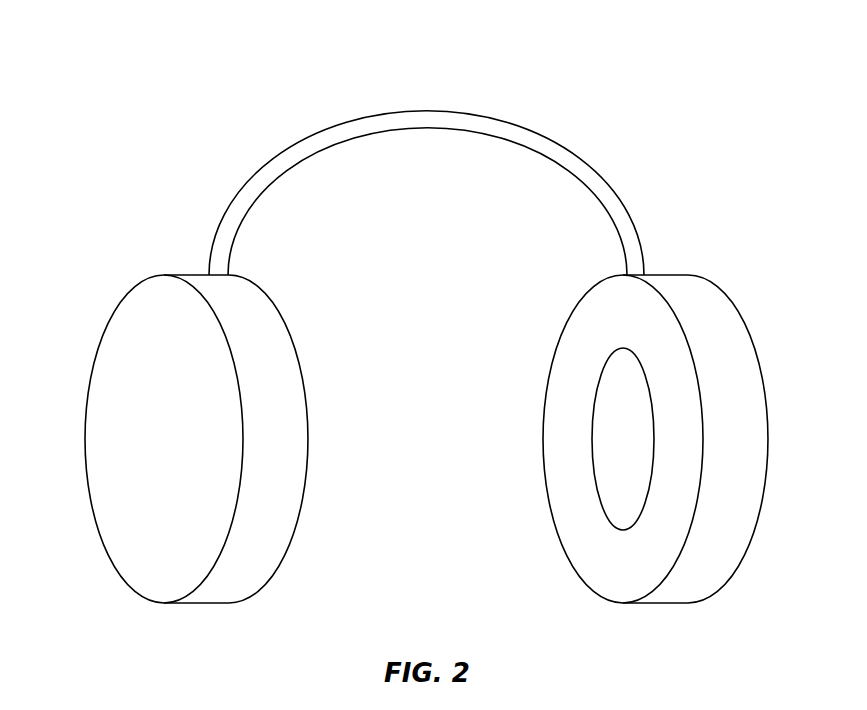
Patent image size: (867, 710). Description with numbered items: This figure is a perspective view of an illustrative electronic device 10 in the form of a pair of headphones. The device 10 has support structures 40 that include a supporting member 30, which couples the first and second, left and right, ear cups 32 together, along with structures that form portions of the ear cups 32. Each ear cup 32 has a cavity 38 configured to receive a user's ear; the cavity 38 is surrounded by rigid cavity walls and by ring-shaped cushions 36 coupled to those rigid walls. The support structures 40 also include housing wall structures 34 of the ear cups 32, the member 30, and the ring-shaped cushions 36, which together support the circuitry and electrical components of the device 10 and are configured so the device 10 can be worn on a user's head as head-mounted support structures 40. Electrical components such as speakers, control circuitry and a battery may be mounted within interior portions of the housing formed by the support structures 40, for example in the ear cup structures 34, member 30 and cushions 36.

The device 10 is at (703, 84).
The member 30 is at (514, 135).
The ear cups 32 is at (437, 449).
The housing wall structures 34 is at (725, 293).
The ring-shaped cushions 36 is at (667, 512).
The cavity 38 is at (610, 443).
The support structures 40 is at (576, 214).